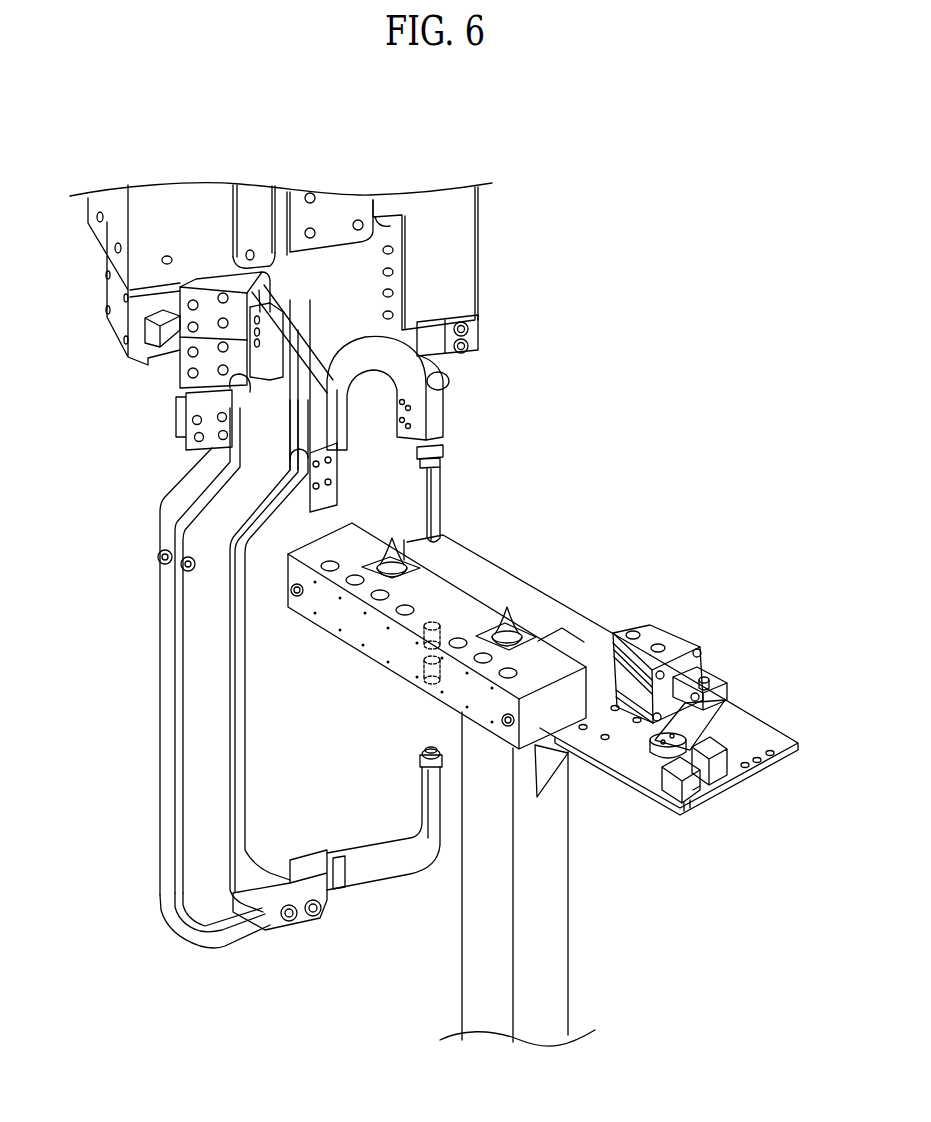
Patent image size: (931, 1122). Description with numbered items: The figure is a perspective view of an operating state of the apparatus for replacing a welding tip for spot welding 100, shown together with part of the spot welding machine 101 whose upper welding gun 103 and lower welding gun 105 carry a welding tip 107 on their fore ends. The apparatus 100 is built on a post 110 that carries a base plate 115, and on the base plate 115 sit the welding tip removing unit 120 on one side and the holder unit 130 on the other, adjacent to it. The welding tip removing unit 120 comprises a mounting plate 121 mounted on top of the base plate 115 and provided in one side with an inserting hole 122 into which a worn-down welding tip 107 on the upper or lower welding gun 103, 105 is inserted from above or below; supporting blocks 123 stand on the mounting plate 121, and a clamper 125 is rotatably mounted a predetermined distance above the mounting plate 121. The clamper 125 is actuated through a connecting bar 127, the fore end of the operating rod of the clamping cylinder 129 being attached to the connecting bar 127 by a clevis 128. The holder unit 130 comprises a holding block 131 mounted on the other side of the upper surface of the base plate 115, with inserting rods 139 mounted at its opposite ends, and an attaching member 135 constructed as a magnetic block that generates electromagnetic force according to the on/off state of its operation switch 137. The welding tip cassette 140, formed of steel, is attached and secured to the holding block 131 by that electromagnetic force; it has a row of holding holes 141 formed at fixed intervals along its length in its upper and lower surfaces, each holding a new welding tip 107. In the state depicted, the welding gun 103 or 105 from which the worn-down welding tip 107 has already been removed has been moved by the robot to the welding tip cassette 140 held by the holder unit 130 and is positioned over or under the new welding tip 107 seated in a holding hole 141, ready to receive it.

The apparatus for replacing a welding tip for spot welding 100 is at (537, 668).
The spot welding machine 101 is at (168, 475).
The upper welding gun 103 is at (439, 478).
The lower welding gun 105 is at (377, 875).
The welding tip 107 is at (425, 630).
The post 110 is at (557, 940).
The base plate 115 is at (527, 568).
The welding tip removing unit 120 is at (673, 728).
The mounting plate 121 is at (748, 733).
The inserting hole 122 is at (697, 815).
The supporting blocks 123 is at (700, 786).
The clamper 125 is at (658, 750).
The connecting bar 127 is at (715, 715).
The clevis 128 is at (700, 674).
The clamping cylinder 129 is at (657, 637).
The holder unit 130 is at (458, 704).
The holding block 131 is at (440, 583).
The attaching member 135 is at (532, 643).
The operation switch 137 is at (528, 617).
The inserting rods 139 is at (503, 727).
The welding tip cassette 140 is at (357, 640).
The holding holes 141 is at (327, 548).